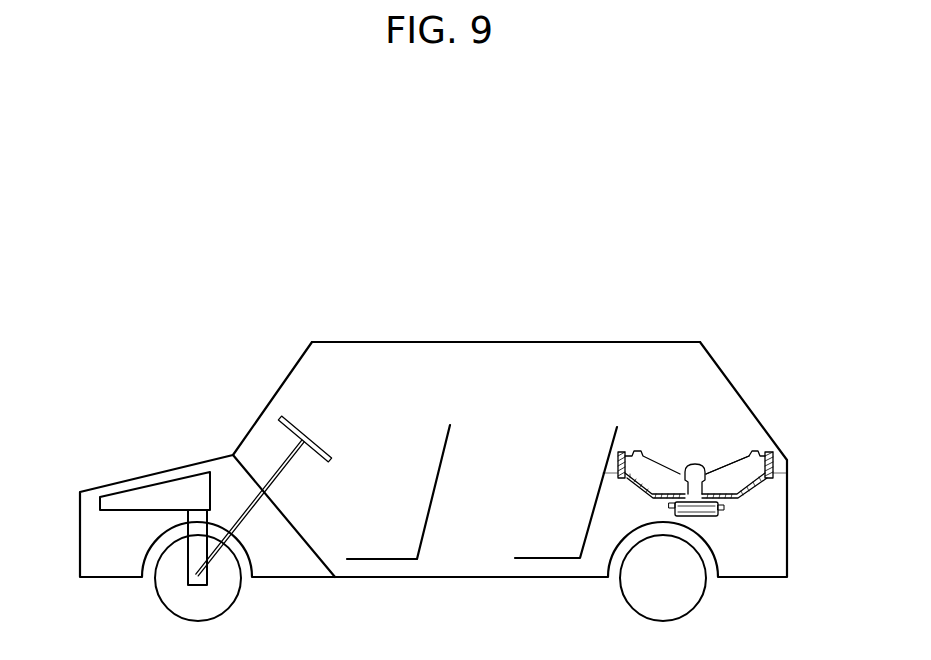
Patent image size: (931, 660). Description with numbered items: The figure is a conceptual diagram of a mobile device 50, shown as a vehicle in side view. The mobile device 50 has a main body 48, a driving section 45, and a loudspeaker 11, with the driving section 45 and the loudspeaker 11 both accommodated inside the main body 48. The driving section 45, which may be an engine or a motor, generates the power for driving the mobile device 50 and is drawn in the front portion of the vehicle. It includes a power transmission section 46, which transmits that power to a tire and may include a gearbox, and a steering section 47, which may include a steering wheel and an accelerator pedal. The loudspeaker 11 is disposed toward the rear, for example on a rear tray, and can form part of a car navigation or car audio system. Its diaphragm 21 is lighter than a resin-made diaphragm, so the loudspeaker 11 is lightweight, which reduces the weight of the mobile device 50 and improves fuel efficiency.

The mobile device 50 is at (748, 270).
The main body 48 is at (615, 340).
The driving section 45 is at (157, 493).
The power transmission section 46 is at (197, 555).
The steering section 47 is at (290, 417).
The loudspeaker 11 is at (697, 465).
The diaphragm 21 is at (732, 472).